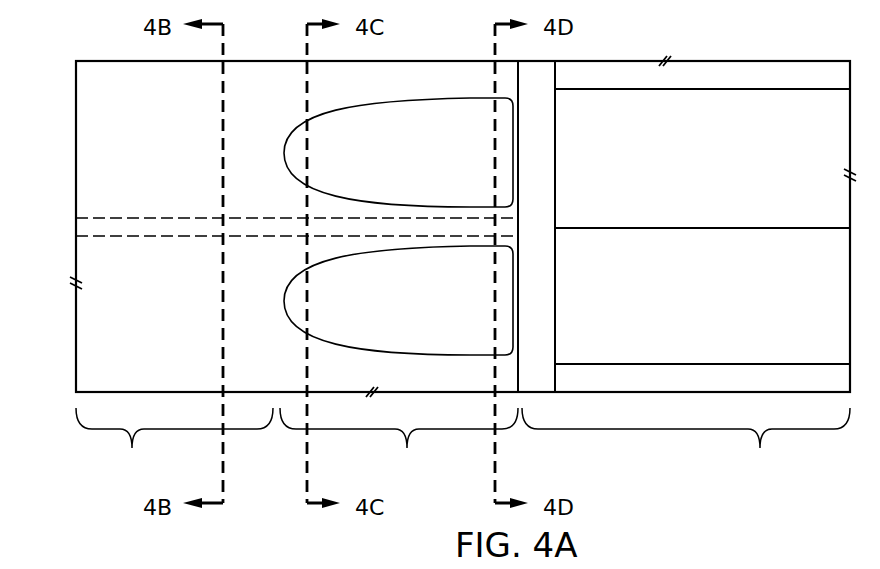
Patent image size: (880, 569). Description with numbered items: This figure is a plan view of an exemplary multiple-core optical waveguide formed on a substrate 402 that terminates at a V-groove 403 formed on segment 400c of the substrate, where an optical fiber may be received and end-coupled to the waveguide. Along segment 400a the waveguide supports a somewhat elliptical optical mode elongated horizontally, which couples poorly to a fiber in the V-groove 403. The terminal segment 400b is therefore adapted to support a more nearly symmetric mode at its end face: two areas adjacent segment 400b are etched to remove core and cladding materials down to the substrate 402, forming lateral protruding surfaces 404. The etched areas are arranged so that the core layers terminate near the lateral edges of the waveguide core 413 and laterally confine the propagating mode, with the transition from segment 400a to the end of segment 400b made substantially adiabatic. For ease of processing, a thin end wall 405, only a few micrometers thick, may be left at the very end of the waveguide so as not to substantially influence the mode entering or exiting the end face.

The waveguide segment 400a is at (174, 445).
The terminal waveguide segment 400b is at (399, 445).
The substrate segment 400c is at (686, 445).
The substrate 402 is at (445, 174).
The V-groove 403 is at (724, 174).
The lateral protruding surfaces 404 is at (476, 198).
The end wall 405 is at (518, 145).
The waveguide core 413 is at (161, 226).